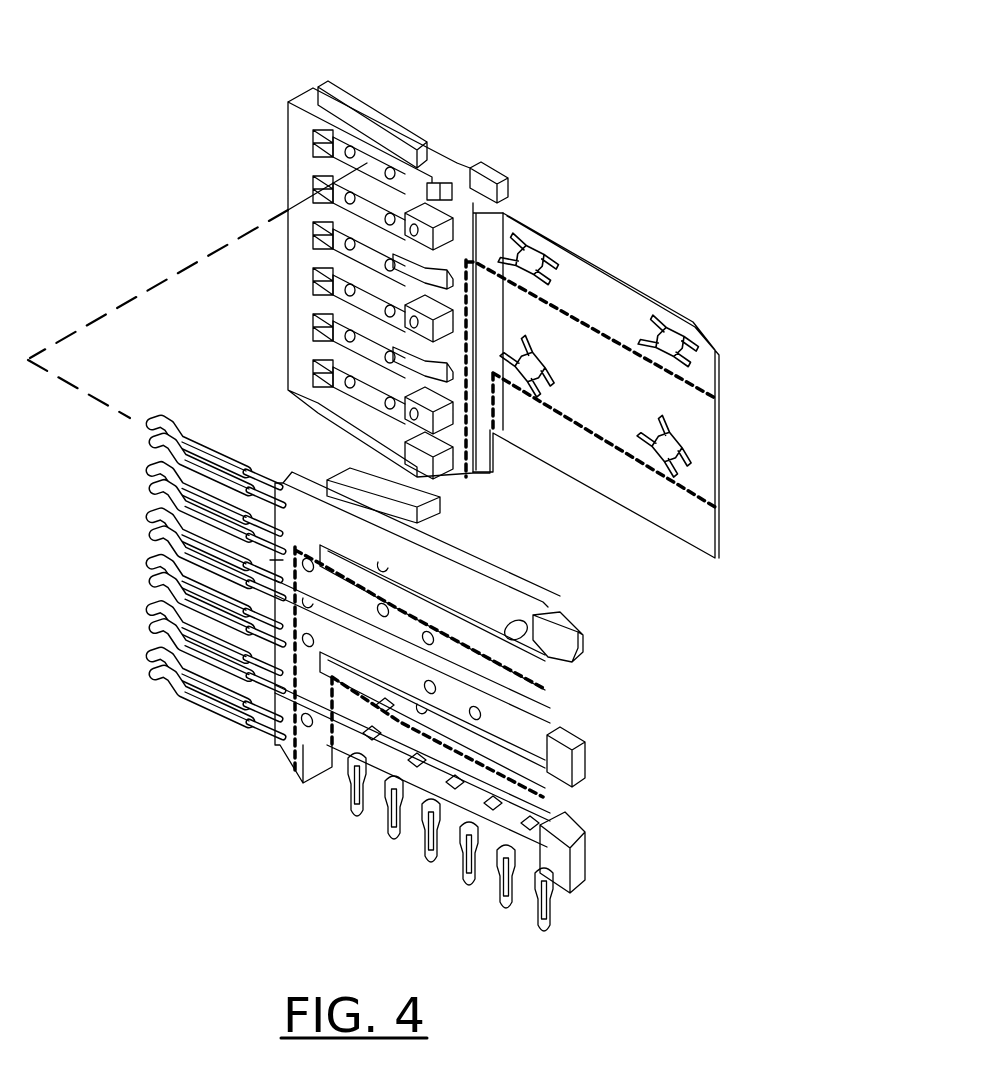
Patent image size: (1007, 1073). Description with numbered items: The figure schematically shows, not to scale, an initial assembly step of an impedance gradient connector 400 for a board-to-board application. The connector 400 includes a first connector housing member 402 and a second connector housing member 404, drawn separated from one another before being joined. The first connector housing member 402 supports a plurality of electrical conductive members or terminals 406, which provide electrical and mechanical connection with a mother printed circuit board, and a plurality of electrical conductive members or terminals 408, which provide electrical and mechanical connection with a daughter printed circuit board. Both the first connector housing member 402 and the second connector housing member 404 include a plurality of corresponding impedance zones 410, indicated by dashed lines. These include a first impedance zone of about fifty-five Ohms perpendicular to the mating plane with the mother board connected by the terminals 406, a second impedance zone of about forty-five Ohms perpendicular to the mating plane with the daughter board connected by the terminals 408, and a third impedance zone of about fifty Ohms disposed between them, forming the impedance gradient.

The impedance gradient connector 400 is at (254, 66).
The first connector housing member 402 is at (518, 582).
The second connector housing member 404 is at (437, 148).
The terminals 406 is at (392, 832).
The terminals 408 is at (147, 672).
The impedance zones 410 is at (533, 140).